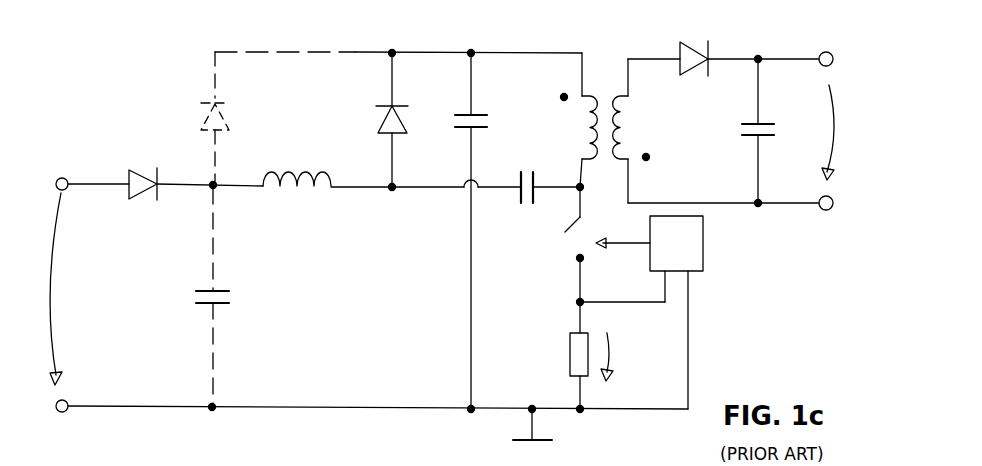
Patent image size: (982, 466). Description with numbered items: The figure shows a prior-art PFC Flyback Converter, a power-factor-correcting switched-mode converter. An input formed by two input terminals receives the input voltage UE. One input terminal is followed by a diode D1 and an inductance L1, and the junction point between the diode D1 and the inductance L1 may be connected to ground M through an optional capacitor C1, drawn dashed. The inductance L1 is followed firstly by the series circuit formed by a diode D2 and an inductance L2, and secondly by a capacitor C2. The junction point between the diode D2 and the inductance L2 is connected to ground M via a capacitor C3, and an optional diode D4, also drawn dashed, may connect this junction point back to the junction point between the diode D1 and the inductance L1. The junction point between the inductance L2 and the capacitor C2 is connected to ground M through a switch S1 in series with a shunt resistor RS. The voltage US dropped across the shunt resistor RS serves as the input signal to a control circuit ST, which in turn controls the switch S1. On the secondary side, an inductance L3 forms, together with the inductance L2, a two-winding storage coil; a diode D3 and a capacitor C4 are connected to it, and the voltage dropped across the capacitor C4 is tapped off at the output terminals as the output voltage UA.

The diode D1 is at (145, 202).
The diode D2 is at (375, 120).
The diode D3 is at (695, 44).
The diode D4 is at (193, 117).
The inductance L1 is at (297, 165).
The inductance L2 is at (572, 120).
The inductance L3 is at (642, 131).
The capacitor C1 is at (232, 296).
The capacitor C2 is at (510, 180).
The capacitor C3 is at (485, 231).
The capacitor C4 is at (772, 131).
The switch S1 is at (553, 227).
The shunt resistor RS is at (557, 354).
The control circuit ST is at (641, 312).
The ground M is at (547, 434).
The input voltage UE is at (74, 289).
The output voltage UA is at (848, 132).
The shunt voltage US is at (630, 357).